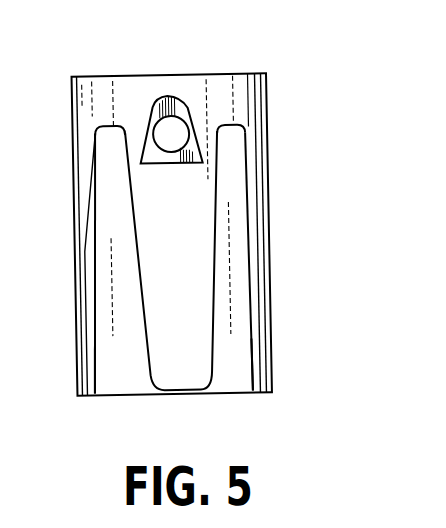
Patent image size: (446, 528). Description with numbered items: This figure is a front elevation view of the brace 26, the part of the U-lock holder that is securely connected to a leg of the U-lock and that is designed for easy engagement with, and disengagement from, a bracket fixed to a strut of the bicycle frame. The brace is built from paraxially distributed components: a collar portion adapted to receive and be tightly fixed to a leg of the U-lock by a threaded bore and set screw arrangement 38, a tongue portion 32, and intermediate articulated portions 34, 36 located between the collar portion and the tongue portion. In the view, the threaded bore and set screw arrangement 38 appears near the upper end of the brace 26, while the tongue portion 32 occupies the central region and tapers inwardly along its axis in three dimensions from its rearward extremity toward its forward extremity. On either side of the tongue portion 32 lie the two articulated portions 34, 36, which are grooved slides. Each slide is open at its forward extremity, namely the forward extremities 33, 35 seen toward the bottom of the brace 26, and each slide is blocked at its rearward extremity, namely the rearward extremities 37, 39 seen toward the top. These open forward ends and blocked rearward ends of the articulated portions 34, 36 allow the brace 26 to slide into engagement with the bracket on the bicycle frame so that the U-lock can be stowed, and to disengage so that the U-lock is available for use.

The brace 26 is at (277, 215).
The tongue portion 32 is at (186, 280).
The forward extremity 33 is at (112, 379).
The articulated portion 34 is at (108, 249).
The forward extremity 35 is at (235, 372).
The articulated portion 36 is at (243, 310).
The rearward extremity 37 is at (102, 129).
The threaded bore and set screw arrangement 38 is at (184, 128).
The rearward extremity 39 is at (240, 157).